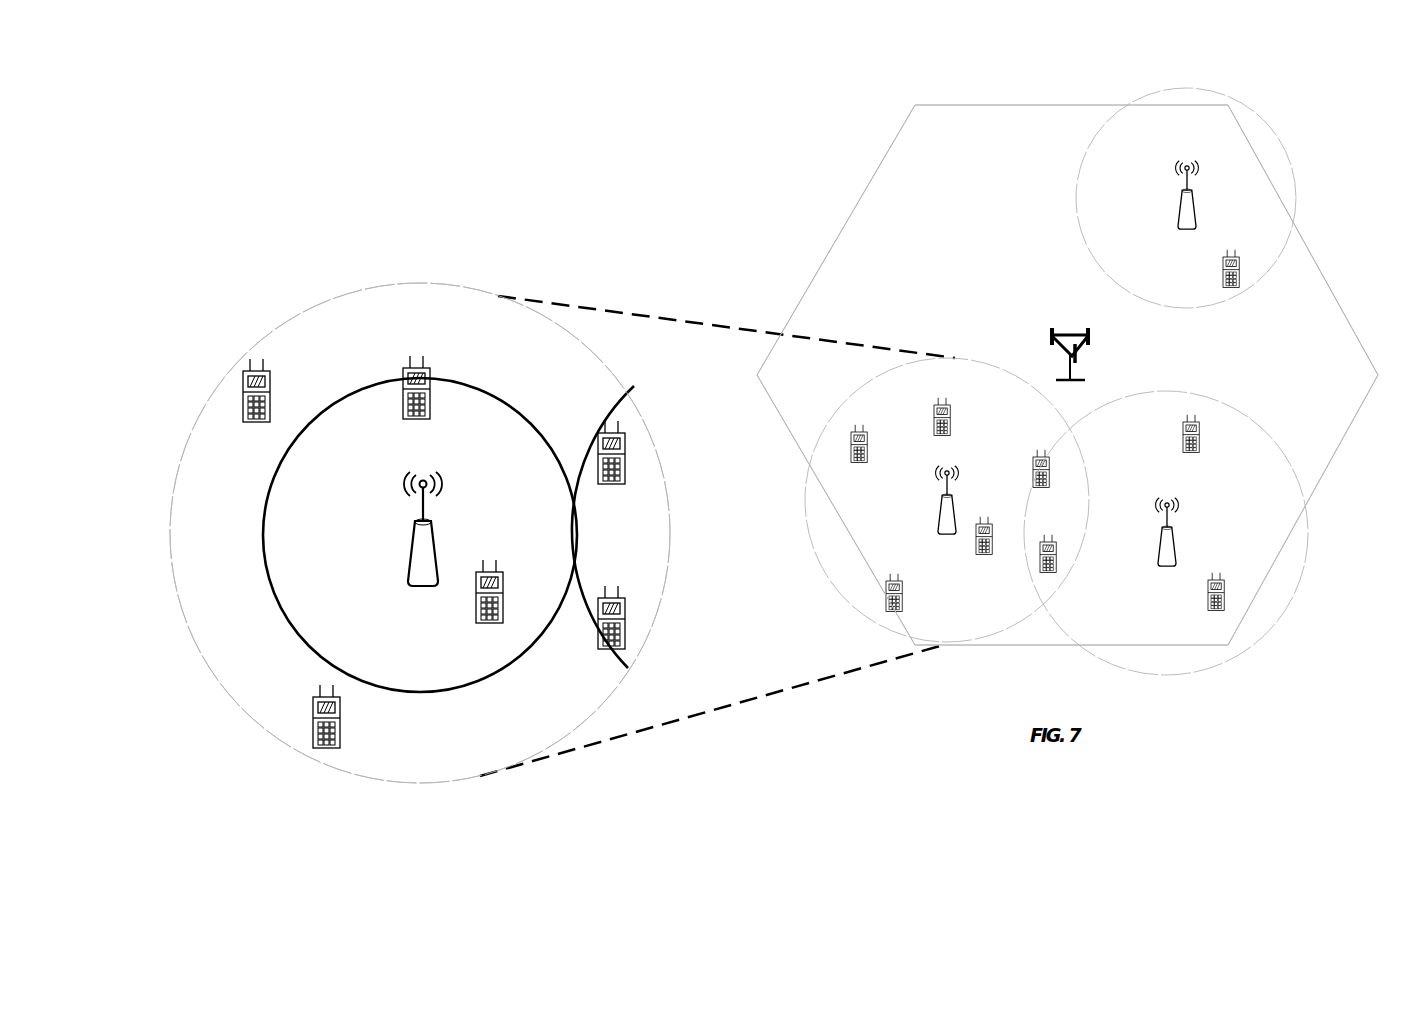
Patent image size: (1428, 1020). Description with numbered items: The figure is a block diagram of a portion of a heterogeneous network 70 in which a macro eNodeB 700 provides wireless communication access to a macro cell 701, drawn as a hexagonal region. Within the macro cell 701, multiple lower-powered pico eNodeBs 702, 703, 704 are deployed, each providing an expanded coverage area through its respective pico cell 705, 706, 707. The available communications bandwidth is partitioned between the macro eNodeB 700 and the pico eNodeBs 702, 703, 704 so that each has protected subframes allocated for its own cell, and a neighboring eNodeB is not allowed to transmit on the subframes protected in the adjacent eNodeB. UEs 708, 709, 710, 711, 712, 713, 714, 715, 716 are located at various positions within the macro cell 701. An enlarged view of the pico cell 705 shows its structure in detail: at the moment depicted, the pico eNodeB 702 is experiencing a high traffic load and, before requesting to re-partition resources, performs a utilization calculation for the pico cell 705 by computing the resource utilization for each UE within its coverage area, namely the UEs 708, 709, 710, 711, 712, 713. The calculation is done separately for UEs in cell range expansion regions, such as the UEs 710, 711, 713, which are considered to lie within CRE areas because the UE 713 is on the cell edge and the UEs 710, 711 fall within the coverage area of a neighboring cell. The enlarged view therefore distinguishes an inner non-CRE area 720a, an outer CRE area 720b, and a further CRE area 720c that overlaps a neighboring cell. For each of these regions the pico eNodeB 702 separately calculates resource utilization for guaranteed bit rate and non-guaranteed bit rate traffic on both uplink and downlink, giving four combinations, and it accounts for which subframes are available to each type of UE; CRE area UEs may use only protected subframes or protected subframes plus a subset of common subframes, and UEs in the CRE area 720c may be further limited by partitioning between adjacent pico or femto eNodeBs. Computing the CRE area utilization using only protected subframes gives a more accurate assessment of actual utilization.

The heterogeneous network 70 is at (818, 142).
The macro eNodeB 700 is at (1074, 386).
The macro cell 701 is at (1330, 462).
The pico eNodeB 702 is at (415, 586).
The pico eNodeB 703 is at (1162, 566).
The pico eNodeB 704 is at (1186, 232).
The pico cell 705 is at (491, 290).
The pico cell 706 is at (1240, 414).
The pico cell 707 is at (1080, 176).
The UE 708 is at (247, 423).
The UE 709 is at (414, 420).
The UE 710 is at (598, 447).
The UE 711 is at (612, 650).
The UE 712 is at (478, 623).
The UE 713 is at (325, 748).
The UE 714 is at (1191, 454).
The UE 715 is at (1219, 615).
The UE 716 is at (1231, 289).
The non-CRE area 720a is at (286, 513).
The CRE area 720b is at (336, 318).
The CRE area 720c is at (646, 459).